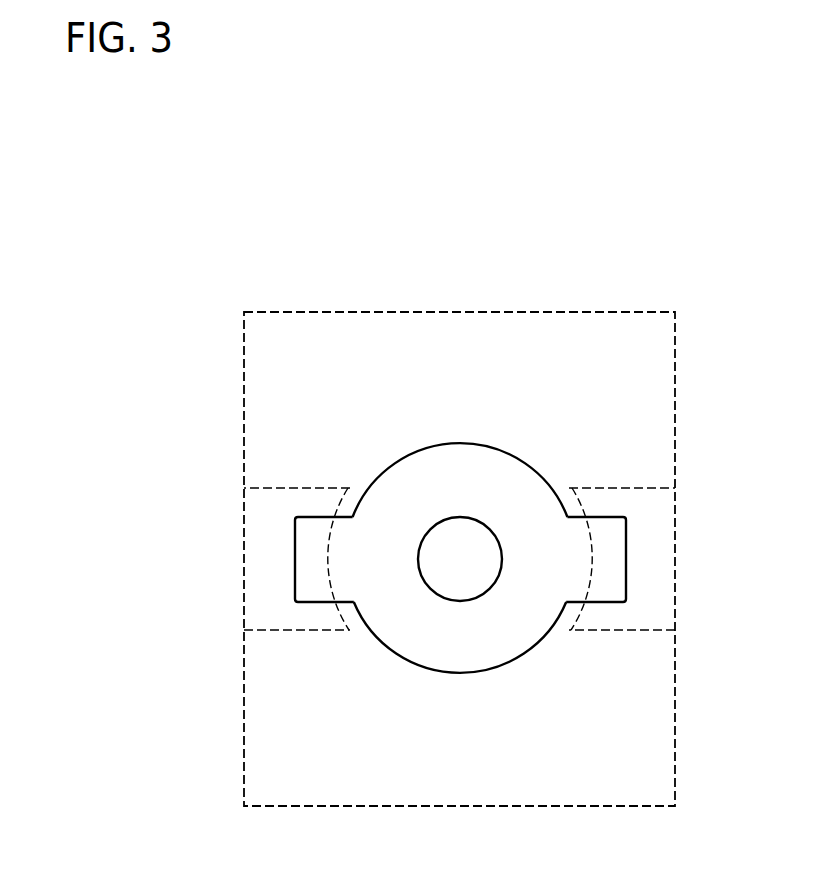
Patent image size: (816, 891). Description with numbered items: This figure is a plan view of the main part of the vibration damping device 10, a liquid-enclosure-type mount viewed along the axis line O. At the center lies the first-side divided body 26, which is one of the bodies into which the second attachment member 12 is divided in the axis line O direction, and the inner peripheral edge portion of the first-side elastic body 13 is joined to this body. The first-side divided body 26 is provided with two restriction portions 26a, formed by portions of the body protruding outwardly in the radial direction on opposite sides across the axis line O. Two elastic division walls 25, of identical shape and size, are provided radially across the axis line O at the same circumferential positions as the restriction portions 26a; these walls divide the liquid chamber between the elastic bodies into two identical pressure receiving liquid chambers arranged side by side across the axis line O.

The vibration damping device 10 is at (705, 162).
The first-side elastic body 13 is at (348, 391).
The elastic division wall 25 is at (272, 502).
The first-side divided body 26 is at (459, 463).
The second attachment member 12 is at (460, 558).
The restriction portion 26a is at (307, 557).
The axis line O is at (460, 558).